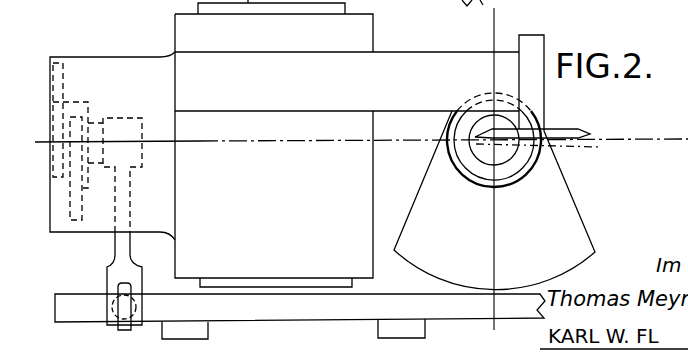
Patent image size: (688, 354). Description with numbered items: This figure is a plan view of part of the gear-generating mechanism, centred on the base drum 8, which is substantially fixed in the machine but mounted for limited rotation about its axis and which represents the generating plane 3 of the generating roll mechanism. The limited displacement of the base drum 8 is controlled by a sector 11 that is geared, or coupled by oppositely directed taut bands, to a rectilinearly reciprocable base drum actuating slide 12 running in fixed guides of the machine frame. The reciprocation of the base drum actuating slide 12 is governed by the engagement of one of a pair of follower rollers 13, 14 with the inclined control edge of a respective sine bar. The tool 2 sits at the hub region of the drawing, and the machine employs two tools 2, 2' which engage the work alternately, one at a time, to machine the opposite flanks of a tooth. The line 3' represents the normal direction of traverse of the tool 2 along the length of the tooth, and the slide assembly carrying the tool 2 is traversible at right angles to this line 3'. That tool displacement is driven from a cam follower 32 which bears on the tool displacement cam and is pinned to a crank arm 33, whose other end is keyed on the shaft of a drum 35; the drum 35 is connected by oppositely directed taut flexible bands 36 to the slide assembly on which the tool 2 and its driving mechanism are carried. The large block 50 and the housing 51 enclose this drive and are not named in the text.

The tool 2 is at (535, 115).
The tool 2' is at (544, 160).
The generating plane 3 is at (355, 141).
The line 3' is at (508, 173).
The base drum 8 is at (471, 174).
The sector 11 is at (587, 257).
The base drum actuating slide 12 is at (467, 306).
The follower roller 13 is at (378, 327).
The follower roller 14 is at (199, 328).
The cam follower 32 is at (113, 308).
The crank arm 33 is at (110, 268).
The drum 35 is at (88, 101).
The taut flexible bands 36 is at (64, 70).
The motor block 50 is at (286, 210).
The housing 51 is at (132, 44).